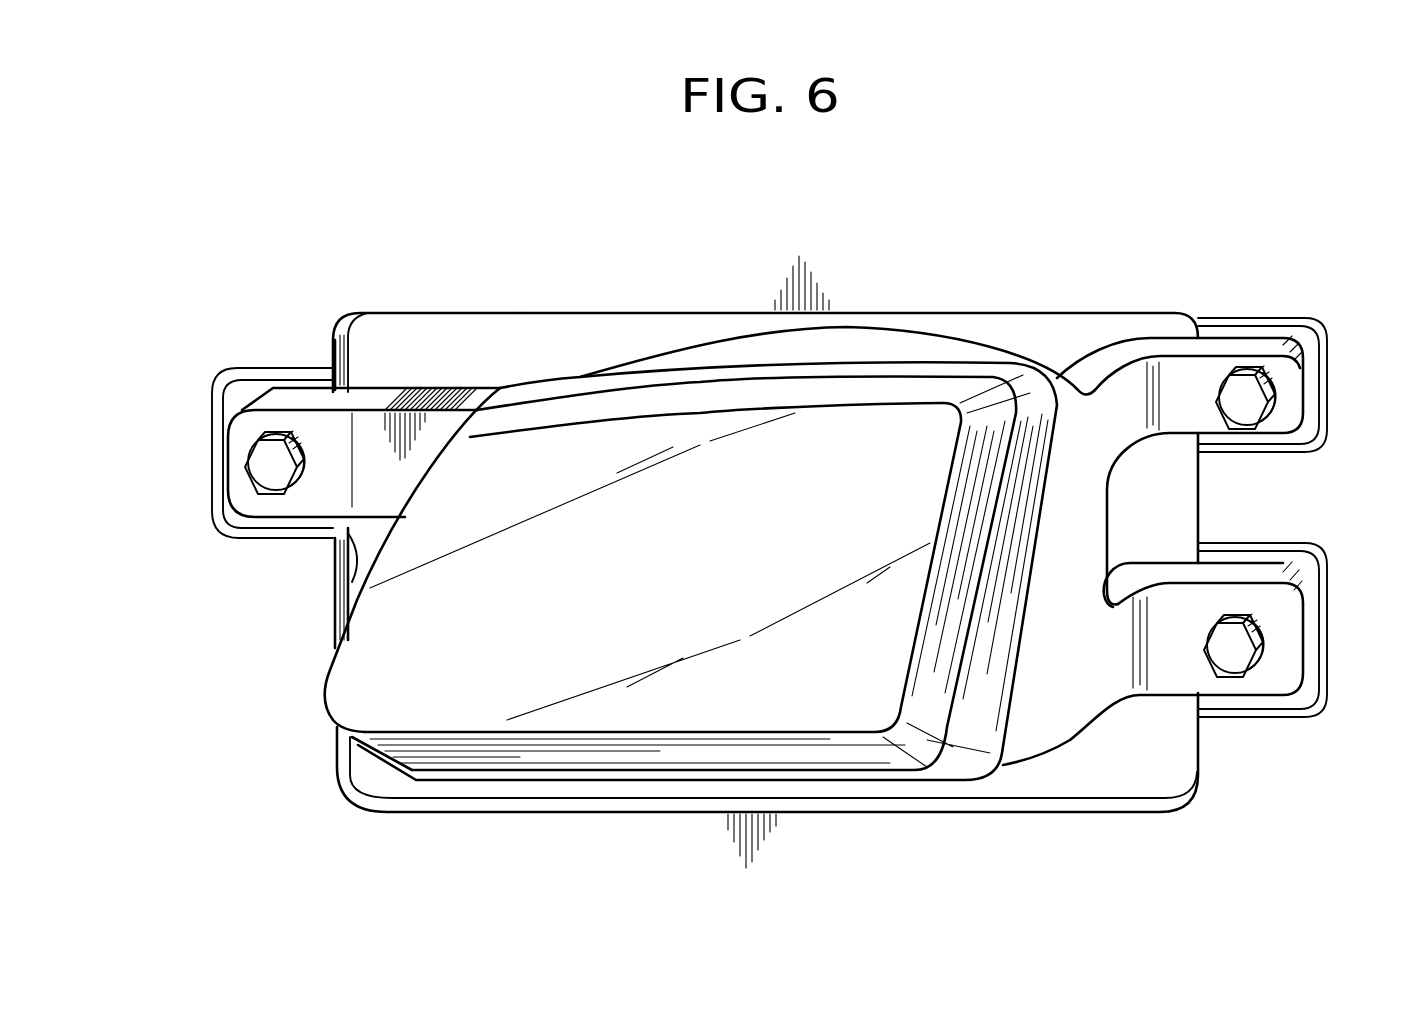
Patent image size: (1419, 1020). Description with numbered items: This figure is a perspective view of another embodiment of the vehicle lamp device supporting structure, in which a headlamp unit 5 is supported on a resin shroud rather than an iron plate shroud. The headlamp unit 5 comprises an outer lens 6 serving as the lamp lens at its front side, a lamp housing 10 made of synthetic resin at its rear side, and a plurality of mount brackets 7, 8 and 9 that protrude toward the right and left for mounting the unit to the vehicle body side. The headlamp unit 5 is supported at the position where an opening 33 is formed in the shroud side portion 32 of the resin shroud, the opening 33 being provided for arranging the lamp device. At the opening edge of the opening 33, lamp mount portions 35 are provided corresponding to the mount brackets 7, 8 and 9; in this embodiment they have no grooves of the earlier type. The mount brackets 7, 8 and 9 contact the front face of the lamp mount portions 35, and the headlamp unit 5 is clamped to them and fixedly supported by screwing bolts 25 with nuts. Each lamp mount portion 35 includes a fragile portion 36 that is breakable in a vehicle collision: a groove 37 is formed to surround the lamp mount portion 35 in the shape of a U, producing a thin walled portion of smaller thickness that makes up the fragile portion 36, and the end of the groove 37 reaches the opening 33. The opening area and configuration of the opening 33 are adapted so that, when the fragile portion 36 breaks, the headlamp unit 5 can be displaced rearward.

The headlamp unit 5 is at (742, 531).
The outer lens 6 is at (653, 606).
The mount bracket 7 is at (1283, 387).
The mount bracket 8 is at (1277, 620).
The mount bracket 9 is at (247, 434).
The lamp housing 10 is at (720, 355).
The bolt 25 is at (262, 478).
The shroud side portion 32 is at (378, 277).
The opening 33 is at (583, 325).
The lamp mount portion 35 is at (235, 523).
The fragile portion 36 is at (343, 367).
The groove 37 is at (277, 377).